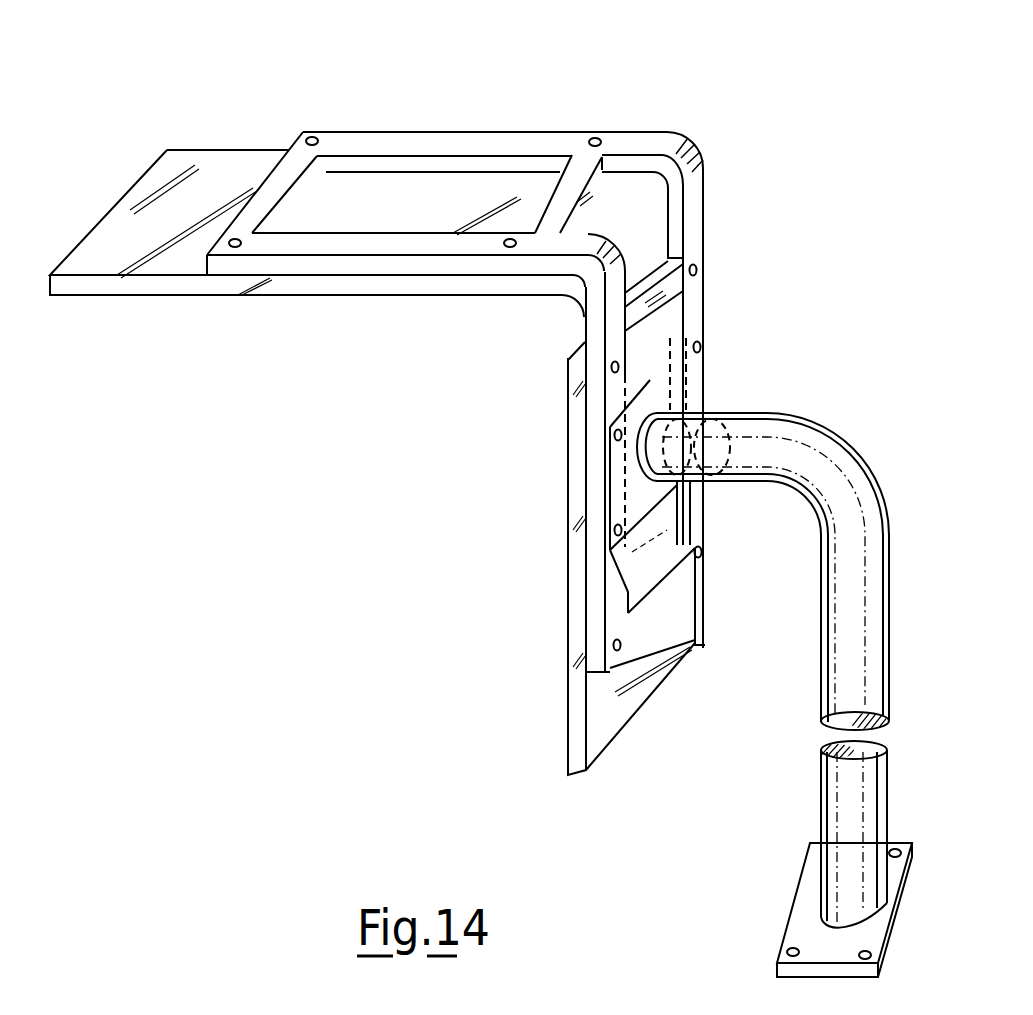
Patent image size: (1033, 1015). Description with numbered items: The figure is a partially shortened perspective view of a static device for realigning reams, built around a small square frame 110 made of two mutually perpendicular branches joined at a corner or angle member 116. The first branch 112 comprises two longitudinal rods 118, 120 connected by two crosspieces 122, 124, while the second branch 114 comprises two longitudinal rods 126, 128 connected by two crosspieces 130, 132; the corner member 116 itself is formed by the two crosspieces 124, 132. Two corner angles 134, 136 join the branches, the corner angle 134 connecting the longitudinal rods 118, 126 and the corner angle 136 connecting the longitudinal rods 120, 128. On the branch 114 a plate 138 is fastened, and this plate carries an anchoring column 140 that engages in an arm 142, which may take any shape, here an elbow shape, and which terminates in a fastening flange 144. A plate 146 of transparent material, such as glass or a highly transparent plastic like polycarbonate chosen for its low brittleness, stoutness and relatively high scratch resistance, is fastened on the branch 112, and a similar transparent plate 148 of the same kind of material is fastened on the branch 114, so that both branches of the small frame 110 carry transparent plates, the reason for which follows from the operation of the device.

The small square frame 110 is at (723, 186).
The branch 112 is at (398, 122).
The branch 114 is at (708, 371).
The corner or angle member 116 is at (695, 130).
The longitudinal rod 118 is at (387, 245).
The longitudinal rod 120 is at (512, 131).
The crosspiece 122 is at (278, 177).
The crosspiece 124 is at (608, 155).
The longitudinal rod 126 is at (595, 497).
The longitudinal rod 128 is at (690, 308).
The crosspiece 130 is at (675, 577).
The crosspiece 132 is at (690, 272).
The corner angle 134 is at (588, 268).
The corner angle 136 is at (700, 157).
The plate 138 is at (620, 465).
The anchoring column 140 is at (688, 457).
The arm 142 is at (800, 453).
The fastening flange 144 is at (805, 918).
The plate of transparent material 146 is at (163, 285).
The plate 148 is at (582, 692).